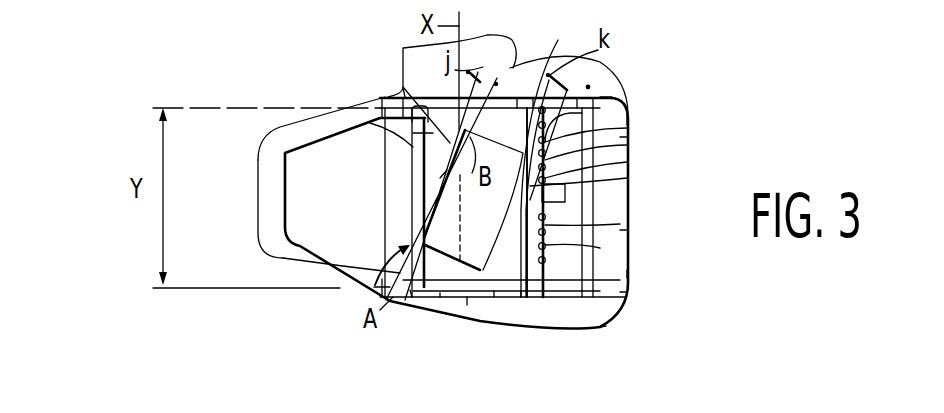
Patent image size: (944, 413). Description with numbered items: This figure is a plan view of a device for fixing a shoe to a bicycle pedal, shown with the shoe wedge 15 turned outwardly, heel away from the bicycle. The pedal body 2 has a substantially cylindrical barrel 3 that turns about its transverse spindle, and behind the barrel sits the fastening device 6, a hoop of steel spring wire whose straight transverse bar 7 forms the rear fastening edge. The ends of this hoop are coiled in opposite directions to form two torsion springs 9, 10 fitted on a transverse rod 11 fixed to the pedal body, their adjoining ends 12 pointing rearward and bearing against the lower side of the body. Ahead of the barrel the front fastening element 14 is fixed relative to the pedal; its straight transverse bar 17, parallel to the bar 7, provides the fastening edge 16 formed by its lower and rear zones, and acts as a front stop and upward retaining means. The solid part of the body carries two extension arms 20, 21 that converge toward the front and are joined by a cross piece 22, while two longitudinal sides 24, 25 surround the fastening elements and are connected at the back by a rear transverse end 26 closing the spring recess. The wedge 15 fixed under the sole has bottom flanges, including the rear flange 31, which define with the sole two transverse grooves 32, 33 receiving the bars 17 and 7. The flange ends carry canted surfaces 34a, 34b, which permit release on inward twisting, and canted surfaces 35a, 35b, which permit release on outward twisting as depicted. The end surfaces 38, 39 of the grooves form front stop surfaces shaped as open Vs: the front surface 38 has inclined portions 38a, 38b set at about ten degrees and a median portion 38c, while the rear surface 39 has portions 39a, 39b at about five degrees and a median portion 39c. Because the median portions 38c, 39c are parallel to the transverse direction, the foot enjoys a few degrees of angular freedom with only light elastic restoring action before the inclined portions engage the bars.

The pedal body 2 is at (471, 171).
The barrel 3 is at (468, 55).
The fastening device 6 is at (530, 331).
The transverse bar 7 is at (641, 119).
The torsion spring 9 is at (628, 80).
The torsion spring 10 is at (607, 247).
The transverse rod 11 is at (563, 331).
The adjoining ends of the torsion springs 12 is at (604, 197).
The front fastening element 14 is at (363, 291).
The wedge 15 is at (463, 326).
The straight fastening edge 16 is at (376, 81).
The straight transverse bar 17 is at (366, 85).
The extension arm 20 is at (308, 277).
The extension arm 21 is at (321, 112).
The cross piece 22 is at (243, 199).
The longitudinal side 24 is at (552, 155).
The longitudinal side 25 is at (426, 333).
The rear transverse end 26 is at (666, 270).
The rear fastening flange 31 is at (678, 245).
The front transverse groove 32 is at (393, 144).
The rear transverse groove 33 is at (625, 185).
The canted surface 34a is at (379, 55).
The canted surface 34b is at (497, 332).
The canted surface 35a is at (374, 177).
The canted surface 35b is at (612, 161).
The front end surface 38 is at (370, 196).
The portion of the front surface 38a is at (474, 200).
The portion of the front surface 38b is at (382, 331).
The median portion of the front surface 38c is at (380, 186).
The rear end surface 39 is at (644, 292).
The portion of the rear surface 39a is at (663, 108).
The portion of the rear surface 39b is at (636, 340).
The median portion of the rear surface 39c is at (625, 222).